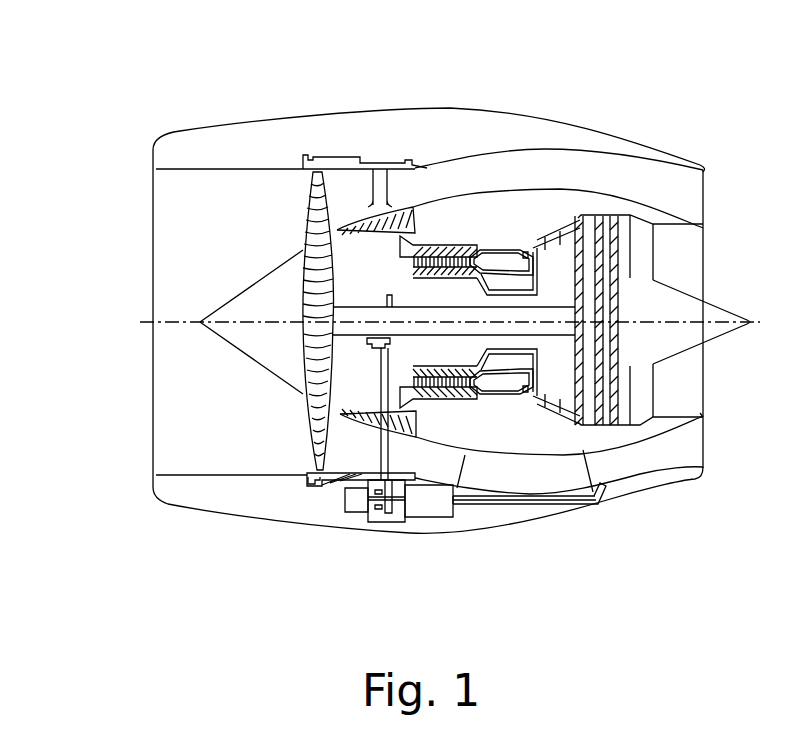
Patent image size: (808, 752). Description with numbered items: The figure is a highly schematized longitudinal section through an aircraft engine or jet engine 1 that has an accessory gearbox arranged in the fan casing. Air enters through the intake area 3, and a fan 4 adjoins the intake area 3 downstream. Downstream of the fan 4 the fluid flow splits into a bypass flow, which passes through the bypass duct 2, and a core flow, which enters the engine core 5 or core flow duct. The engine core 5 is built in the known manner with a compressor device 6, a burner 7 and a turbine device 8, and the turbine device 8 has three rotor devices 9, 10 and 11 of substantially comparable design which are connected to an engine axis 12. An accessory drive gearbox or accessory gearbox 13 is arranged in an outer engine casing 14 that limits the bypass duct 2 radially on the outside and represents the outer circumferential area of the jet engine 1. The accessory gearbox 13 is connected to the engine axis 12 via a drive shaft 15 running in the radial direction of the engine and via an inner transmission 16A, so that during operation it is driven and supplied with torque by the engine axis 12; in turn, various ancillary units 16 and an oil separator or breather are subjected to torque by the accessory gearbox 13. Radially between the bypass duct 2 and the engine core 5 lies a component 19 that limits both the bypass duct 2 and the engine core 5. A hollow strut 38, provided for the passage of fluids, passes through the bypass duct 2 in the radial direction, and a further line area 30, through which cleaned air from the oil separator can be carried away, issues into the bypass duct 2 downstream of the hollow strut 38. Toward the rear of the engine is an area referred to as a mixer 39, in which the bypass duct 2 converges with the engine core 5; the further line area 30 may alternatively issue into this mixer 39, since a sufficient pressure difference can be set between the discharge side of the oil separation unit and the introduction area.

The jet engine 1 is at (212, 92).
The bypass duct 2 is at (463, 173).
The intake area 3 is at (167, 195).
The fan 4 is at (303, 168).
The engine core 5 is at (340, 477).
The compressor device 6 is at (430, 246).
The burner 7 is at (507, 258).
The turbine device 8 is at (593, 214).
The rotor device 9 is at (592, 216).
The rotor device 10 is at (594, 214).
The rotor device 11 is at (606, 245).
The engine axis 12 is at (545, 330).
The accessory gearbox 13 is at (398, 522).
The outer engine casing 14 is at (314, 487).
The drive shaft 15 is at (350, 422).
The ancillary units 16 is at (447, 517).
The inner transmission 16A is at (355, 350).
The component 19 is at (307, 482).
The further line area 30 is at (553, 495).
The hollow strut 38 is at (510, 490).
The mixer 39 is at (703, 413).